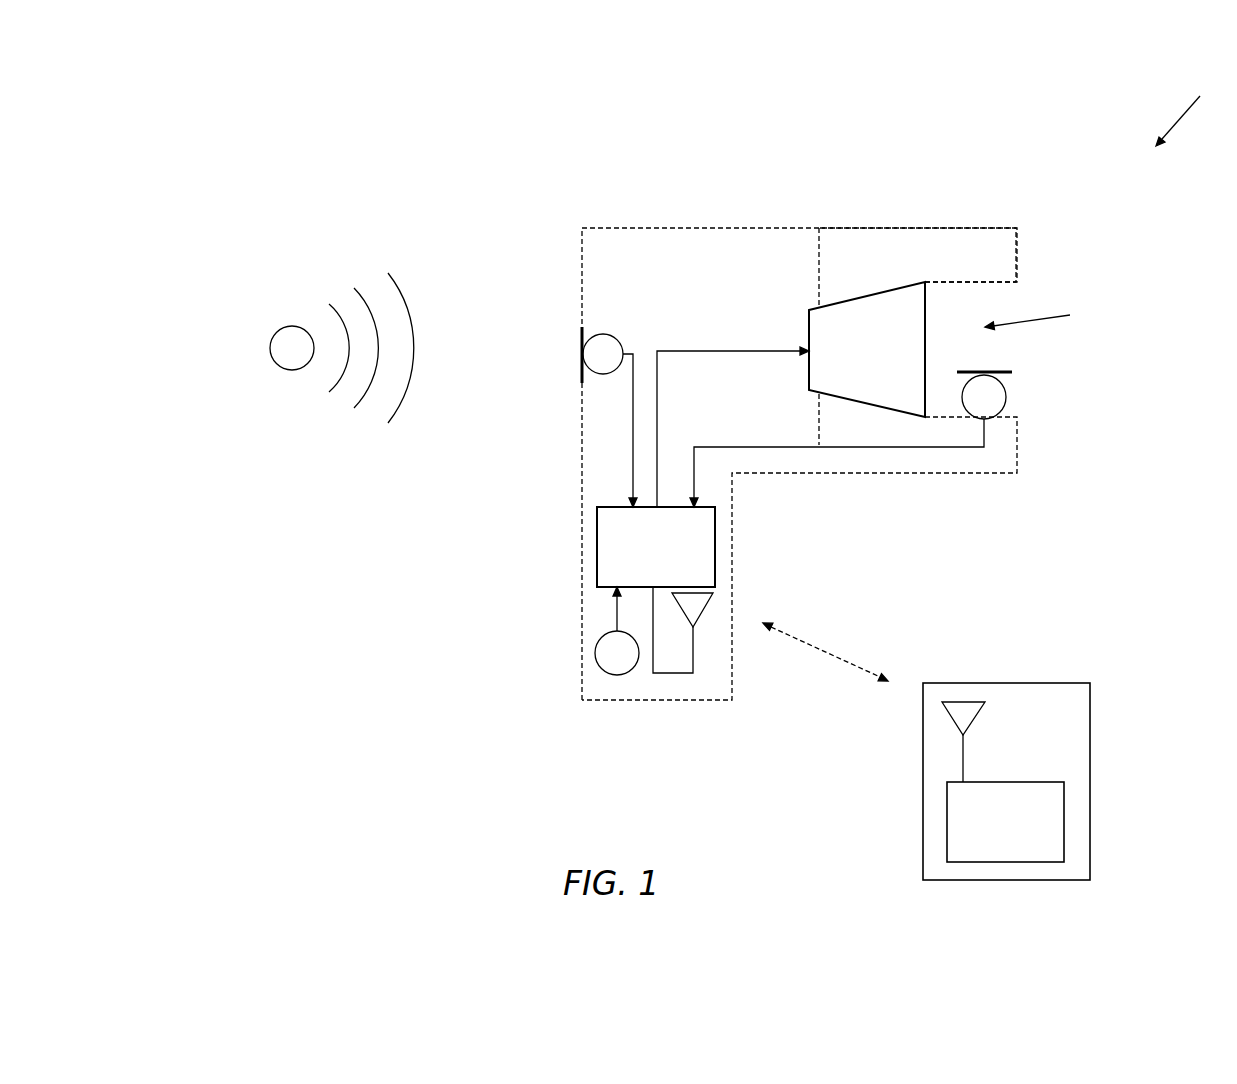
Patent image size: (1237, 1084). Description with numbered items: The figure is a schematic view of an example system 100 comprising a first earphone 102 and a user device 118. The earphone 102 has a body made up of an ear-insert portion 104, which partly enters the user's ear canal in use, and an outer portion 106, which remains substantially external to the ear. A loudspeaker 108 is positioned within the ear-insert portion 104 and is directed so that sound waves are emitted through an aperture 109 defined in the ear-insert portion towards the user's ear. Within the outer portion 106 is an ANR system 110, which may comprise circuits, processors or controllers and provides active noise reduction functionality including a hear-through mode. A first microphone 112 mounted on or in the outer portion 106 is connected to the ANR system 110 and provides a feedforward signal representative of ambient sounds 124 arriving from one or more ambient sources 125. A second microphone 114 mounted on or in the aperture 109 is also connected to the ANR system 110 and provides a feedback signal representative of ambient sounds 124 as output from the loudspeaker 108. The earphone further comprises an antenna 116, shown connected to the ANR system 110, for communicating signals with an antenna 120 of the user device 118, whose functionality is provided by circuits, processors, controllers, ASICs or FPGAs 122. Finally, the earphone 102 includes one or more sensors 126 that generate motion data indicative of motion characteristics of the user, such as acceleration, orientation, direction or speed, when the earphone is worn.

The system 100 is at (1194, 109).
The first earphone 102 is at (755, 228).
The ear-insert portion 104 is at (952, 264).
The outer portion 106 is at (703, 270).
The loudspeaker 108 is at (887, 365).
The aperture 109 is at (1051, 322).
The ANR system 110 is at (597, 542).
The first microphone 112 is at (578, 353).
The second microphone 114 is at (1006, 390).
The antenna 116 is at (695, 630).
The user device 118 is at (1090, 733).
The antenna 120 is at (948, 713).
The circuits, processors, controllers, ASICs or FPGAs 122 is at (947, 828).
The ambient sounds 124 is at (388, 280).
The ambient sources 125 is at (270, 352).
The sensors 126 is at (596, 665).